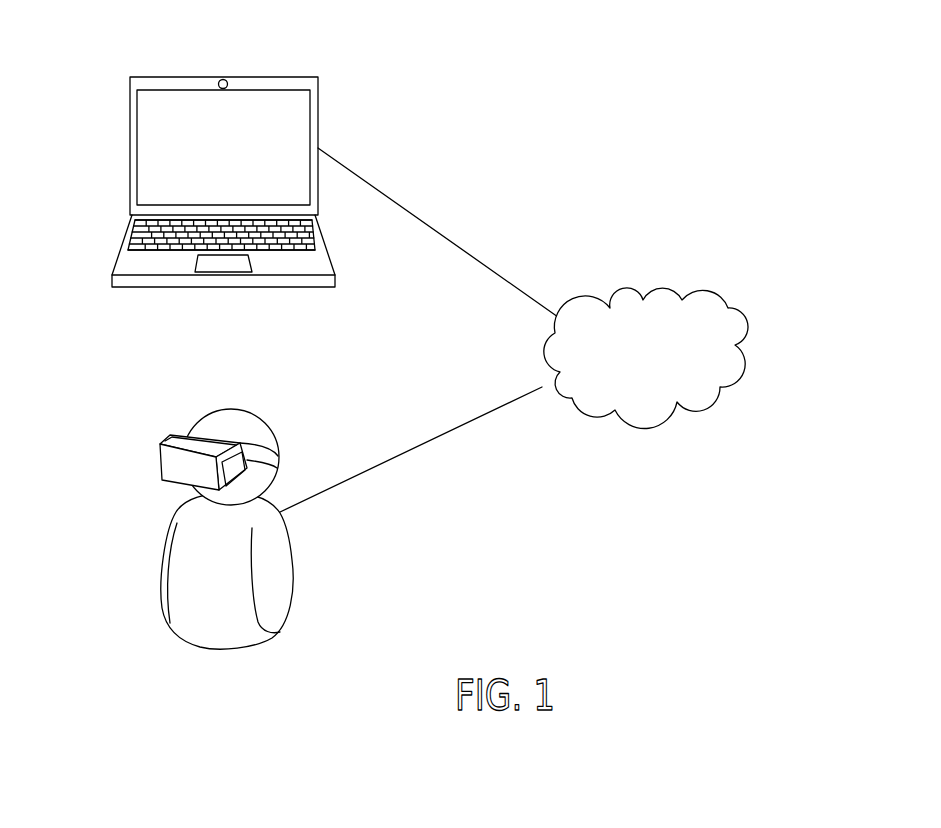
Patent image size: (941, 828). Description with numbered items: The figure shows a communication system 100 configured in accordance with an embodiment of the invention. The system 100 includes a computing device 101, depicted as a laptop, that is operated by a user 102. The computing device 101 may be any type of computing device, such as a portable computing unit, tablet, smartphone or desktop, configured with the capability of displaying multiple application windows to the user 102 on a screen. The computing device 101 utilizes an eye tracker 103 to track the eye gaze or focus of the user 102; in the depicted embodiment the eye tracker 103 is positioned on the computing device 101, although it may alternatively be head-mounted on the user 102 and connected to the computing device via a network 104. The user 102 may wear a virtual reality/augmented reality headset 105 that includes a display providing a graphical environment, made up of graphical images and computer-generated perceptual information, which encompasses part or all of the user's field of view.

The communication system 100 is at (842, 128).
The computing device 101 is at (130, 148).
The user 102 is at (167, 547).
The eye tracker 103 is at (222, 79).
The network 104 is at (666, 288).
The virtual reality/augmented reality (VR/AR) headset 105 is at (158, 457).